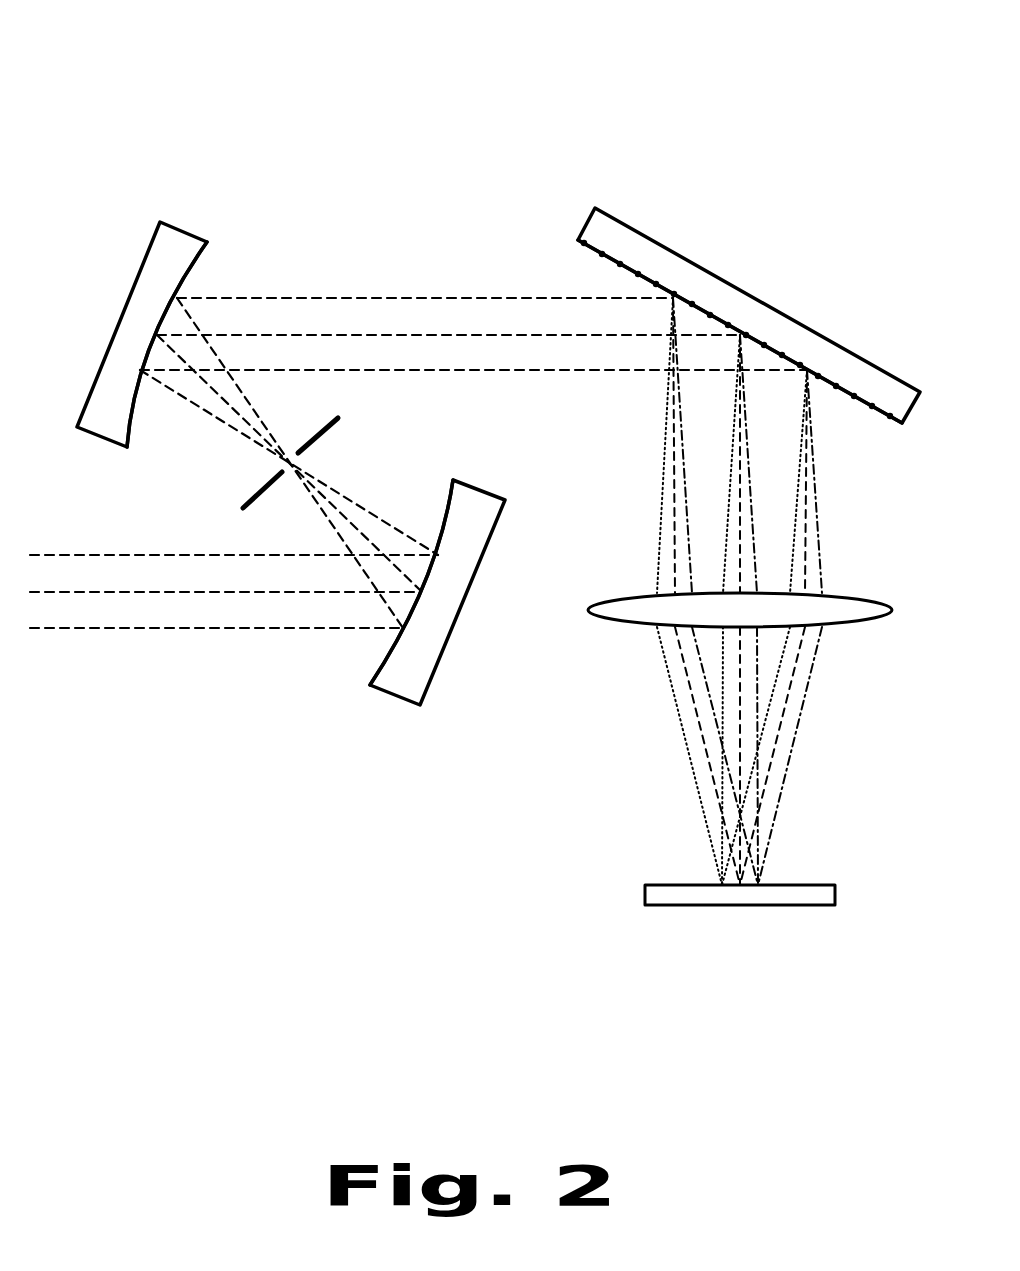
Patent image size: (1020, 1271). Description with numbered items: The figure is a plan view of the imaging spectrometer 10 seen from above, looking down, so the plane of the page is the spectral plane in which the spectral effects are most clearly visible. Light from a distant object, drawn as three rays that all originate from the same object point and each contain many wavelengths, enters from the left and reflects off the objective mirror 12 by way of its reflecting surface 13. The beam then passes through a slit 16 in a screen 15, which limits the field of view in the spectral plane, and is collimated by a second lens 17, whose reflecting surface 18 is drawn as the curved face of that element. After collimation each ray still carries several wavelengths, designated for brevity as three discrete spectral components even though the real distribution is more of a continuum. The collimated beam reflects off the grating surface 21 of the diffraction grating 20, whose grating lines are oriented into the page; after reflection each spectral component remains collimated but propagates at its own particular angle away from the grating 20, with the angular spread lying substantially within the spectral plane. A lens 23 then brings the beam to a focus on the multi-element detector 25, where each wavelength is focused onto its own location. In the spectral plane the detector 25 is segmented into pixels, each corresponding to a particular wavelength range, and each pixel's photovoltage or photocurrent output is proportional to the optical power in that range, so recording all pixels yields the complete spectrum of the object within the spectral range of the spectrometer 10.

The imaging spectrometer 10 is at (114, 80).
The objective mirror 12 is at (422, 655).
The reflecting surface 13 is at (378, 670).
The screen 15 is at (247, 500).
The slit 16 is at (297, 460).
The second lens 17 is at (173, 243).
The reflecting surface 18 is at (207, 248).
The diffraction grating 20 is at (608, 232).
The grating surface 21 is at (580, 242).
The lens 23 is at (627, 610).
The multi-element detector 25 is at (672, 885).